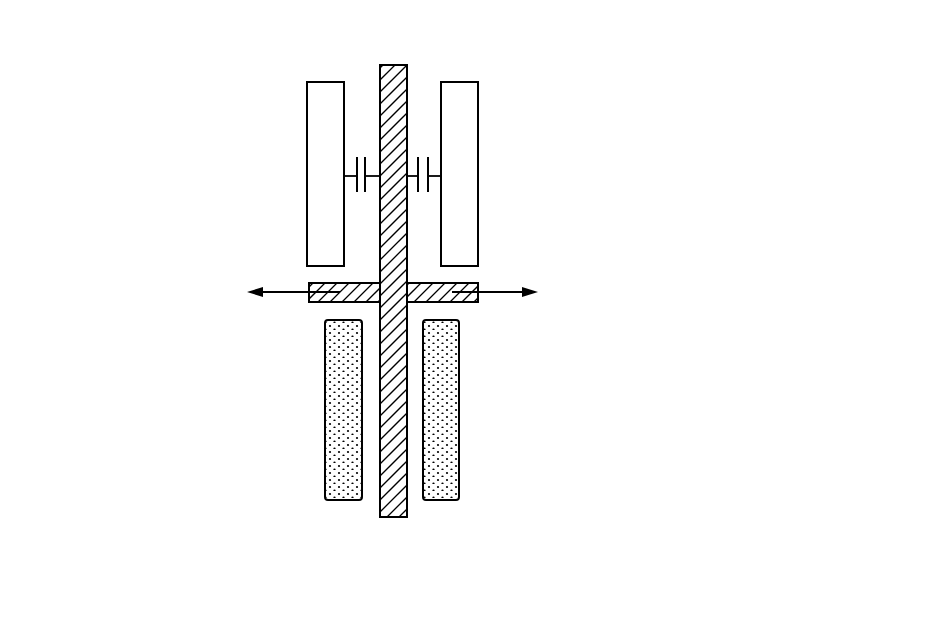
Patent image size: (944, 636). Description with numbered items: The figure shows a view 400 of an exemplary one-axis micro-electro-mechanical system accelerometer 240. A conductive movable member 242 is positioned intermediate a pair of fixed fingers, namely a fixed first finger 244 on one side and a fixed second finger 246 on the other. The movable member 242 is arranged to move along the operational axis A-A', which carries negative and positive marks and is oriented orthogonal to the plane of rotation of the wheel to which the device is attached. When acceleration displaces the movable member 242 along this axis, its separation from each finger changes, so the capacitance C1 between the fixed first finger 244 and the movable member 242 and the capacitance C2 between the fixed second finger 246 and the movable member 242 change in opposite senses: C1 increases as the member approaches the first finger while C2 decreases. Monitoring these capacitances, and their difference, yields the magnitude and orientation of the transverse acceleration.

The cross-sectional view of accelerometer along A-A' 400 is at (344, 310).
The MEMS accelerometer 240 is at (528, 59).
The movable member 242 is at (405, 509).
The fixed first finger 244 is at (463, 233).
The fixed second finger 246 is at (308, 217).
The capacitance between first finger and movable member C1 is at (425, 156).
The capacitance between second finger and movable member C2 is at (362, 156).